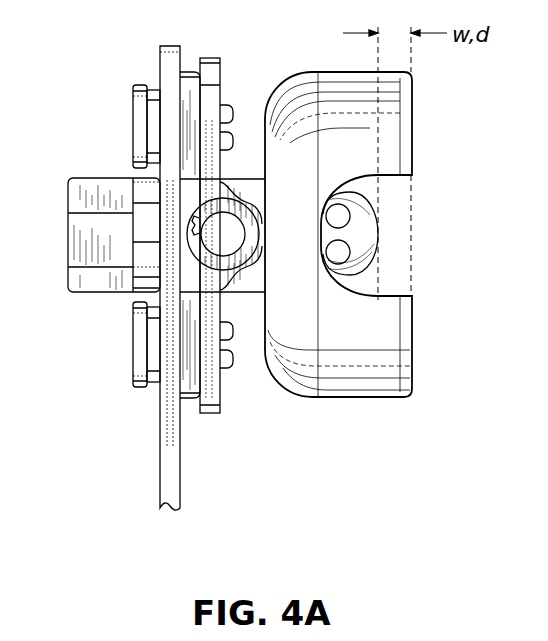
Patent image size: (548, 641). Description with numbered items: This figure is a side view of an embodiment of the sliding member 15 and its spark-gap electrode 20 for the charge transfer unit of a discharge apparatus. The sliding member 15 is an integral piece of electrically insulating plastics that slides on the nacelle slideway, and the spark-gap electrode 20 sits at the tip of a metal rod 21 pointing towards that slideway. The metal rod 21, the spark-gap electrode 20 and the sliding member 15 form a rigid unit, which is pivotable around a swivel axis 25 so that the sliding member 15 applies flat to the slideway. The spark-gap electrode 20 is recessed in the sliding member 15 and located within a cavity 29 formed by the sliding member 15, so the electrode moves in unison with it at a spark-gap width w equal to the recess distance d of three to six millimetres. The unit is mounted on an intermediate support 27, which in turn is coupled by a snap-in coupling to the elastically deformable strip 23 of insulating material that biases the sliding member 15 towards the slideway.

The sliding member 15 is at (350, 370).
The spark-gap electrode 20 is at (365, 236).
The metal rod 21 is at (140, 283).
The elastically deformable strip 23 is at (163, 477).
The swivel axis 25 is at (230, 250).
The intermediate support 27 is at (212, 94).
The cavity 29 is at (386, 294).